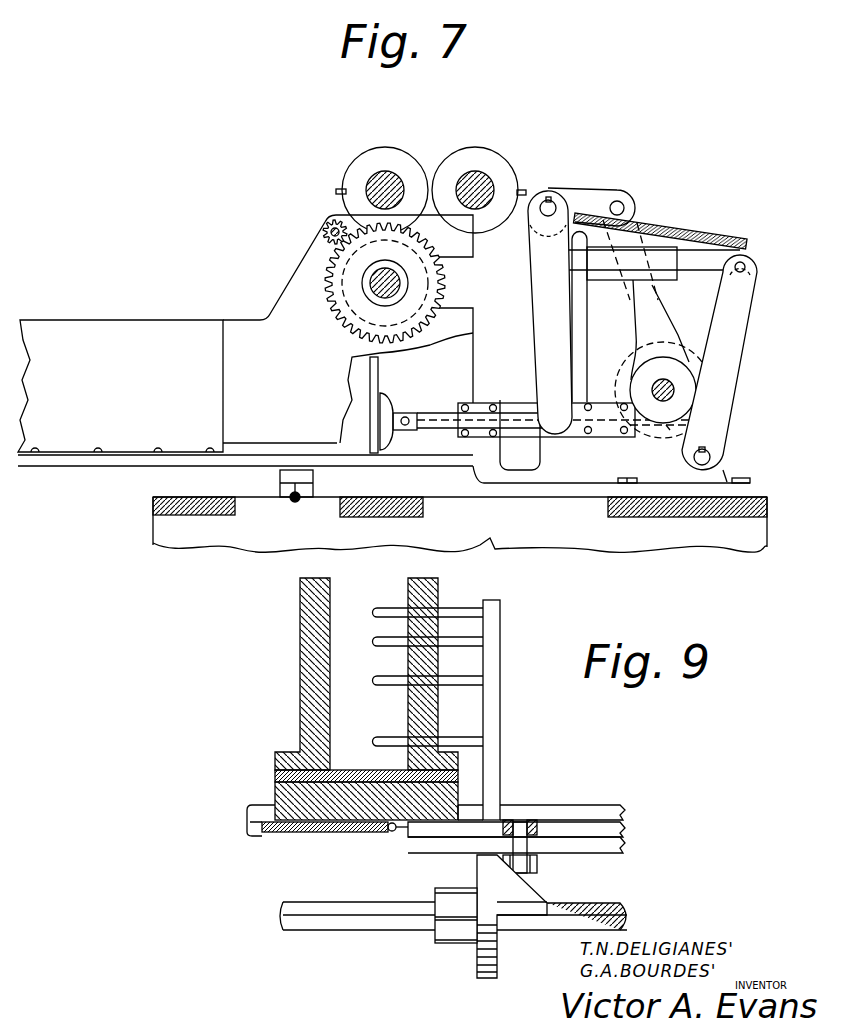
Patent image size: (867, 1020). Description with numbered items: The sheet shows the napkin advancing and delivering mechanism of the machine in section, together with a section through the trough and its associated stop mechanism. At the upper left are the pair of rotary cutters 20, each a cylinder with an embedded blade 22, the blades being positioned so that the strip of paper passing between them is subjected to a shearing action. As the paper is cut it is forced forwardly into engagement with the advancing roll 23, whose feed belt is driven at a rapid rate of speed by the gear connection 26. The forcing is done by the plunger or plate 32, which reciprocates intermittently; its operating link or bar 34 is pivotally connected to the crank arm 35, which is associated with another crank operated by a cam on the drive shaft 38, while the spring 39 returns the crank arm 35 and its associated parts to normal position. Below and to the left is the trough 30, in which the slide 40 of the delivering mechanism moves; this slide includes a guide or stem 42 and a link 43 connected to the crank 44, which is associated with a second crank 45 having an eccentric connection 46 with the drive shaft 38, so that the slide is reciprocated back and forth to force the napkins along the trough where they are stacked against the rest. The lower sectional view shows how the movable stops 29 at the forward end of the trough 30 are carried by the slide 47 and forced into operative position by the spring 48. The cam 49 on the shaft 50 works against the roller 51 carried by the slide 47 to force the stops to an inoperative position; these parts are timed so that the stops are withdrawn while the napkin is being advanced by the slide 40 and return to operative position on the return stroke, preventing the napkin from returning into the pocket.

In FIG. 7, the rotary cutters 20 is at (470, 160).
In FIG. 7, the blade 22 is at (342, 193).
In FIG. 7, the advancing roll 23 is at (365, 300).
In FIG. 7, the gear connection 26 is at (325, 221).
In FIG. 9, the movable stops 29 is at (382, 607).
In FIG. 7, the trough 30 is at (135, 334).
In FIG. 9, the trough 30 is at (310, 655).
In FIG. 7, the plunger or plate 32 is at (473, 233).
In FIG. 7, the operating link or bar 34 is at (708, 268).
In FIG. 7, the crank arm 35 is at (735, 353).
In FIG. 7, the drive shaft 38 is at (660, 398).
In FIG. 7, the spring 39 is at (696, 236).
In FIG. 7, the slide 40 is at (380, 418).
In FIG. 7, the guide or stem 42 is at (667, 430).
In FIG. 7, the link 43 is at (510, 413).
In FIG. 7, the crank 44 is at (548, 320).
In FIG. 7, the second crank 45 is at (597, 192).
In FIG. 7, the eccentric connection 46 is at (648, 315).
In FIG. 9, the slide 47 is at (492, 782).
In FIG. 9, the spring 48 is at (303, 837).
In FIG. 9, the cam 49 is at (474, 940).
In FIG. 9, the shaft 50 is at (340, 914).
In FIG. 9, the roller 51 is at (538, 862).